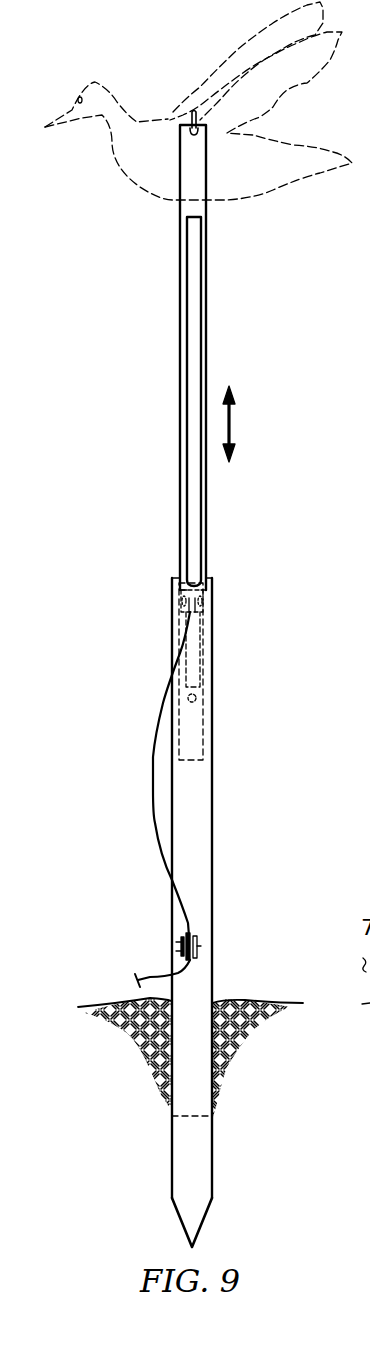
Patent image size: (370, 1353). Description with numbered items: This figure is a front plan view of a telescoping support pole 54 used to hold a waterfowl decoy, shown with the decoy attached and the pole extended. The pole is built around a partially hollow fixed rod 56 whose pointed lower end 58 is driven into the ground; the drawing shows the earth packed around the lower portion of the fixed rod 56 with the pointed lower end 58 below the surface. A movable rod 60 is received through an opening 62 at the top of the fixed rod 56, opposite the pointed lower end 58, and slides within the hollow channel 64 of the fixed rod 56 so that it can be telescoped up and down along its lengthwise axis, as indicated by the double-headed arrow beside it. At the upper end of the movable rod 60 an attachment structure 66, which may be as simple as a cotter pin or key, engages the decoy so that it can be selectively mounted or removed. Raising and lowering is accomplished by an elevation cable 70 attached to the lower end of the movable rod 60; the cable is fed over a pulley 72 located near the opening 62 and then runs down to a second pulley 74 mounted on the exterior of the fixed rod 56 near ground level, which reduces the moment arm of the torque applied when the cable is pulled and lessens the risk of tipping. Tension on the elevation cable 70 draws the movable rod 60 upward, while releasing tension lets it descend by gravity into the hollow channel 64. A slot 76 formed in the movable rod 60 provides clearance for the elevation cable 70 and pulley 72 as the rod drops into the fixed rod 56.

The telescoping support pole 54 is at (145, 459).
The fixed rod 56 is at (212, 834).
The pointed lower end 58 is at (172, 1181).
The movable rod 60 is at (180, 313).
The opening 62 is at (208, 578).
The hollow channel 64 is at (193, 742).
The attachment structure 66 is at (208, 111).
The elevation cable 70 is at (153, 976).
The pulley 72 is at (203, 608).
The second pulley 74 is at (202, 946).
The slot 76 is at (194, 372).